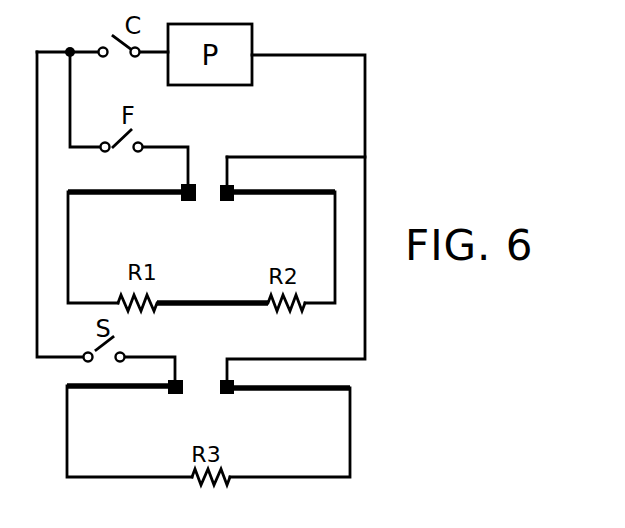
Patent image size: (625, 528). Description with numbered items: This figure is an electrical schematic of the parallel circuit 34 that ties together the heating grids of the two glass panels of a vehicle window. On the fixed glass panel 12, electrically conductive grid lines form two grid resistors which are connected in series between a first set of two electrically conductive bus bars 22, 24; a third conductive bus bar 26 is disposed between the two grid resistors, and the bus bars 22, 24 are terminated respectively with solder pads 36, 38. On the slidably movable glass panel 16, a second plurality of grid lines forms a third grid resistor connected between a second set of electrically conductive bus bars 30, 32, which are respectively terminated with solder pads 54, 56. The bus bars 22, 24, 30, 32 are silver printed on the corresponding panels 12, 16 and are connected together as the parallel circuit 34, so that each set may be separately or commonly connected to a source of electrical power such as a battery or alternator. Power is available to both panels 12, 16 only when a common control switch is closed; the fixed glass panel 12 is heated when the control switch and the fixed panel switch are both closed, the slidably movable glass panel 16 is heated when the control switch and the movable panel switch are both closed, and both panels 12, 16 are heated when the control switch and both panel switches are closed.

The fixed glass panel 12 is at (227, 275).
The slidably movable glass panel 16 is at (300, 459).
The electrically conductive bus bar 22 is at (96, 197).
The electrically conductive bus bar 24 is at (285, 198).
The third conductive bus bar 26 is at (198, 306).
The electrically conductive bus bar 30 is at (287, 392).
The electrically conductive bus bar 32 is at (100, 390).
The parallel circuit 34 is at (404, 166).
The solder pad 36 is at (181, 188).
The solder pad 38 is at (233, 190).
The solder pad 54 is at (229, 395).
The solder pad 56 is at (182, 394).